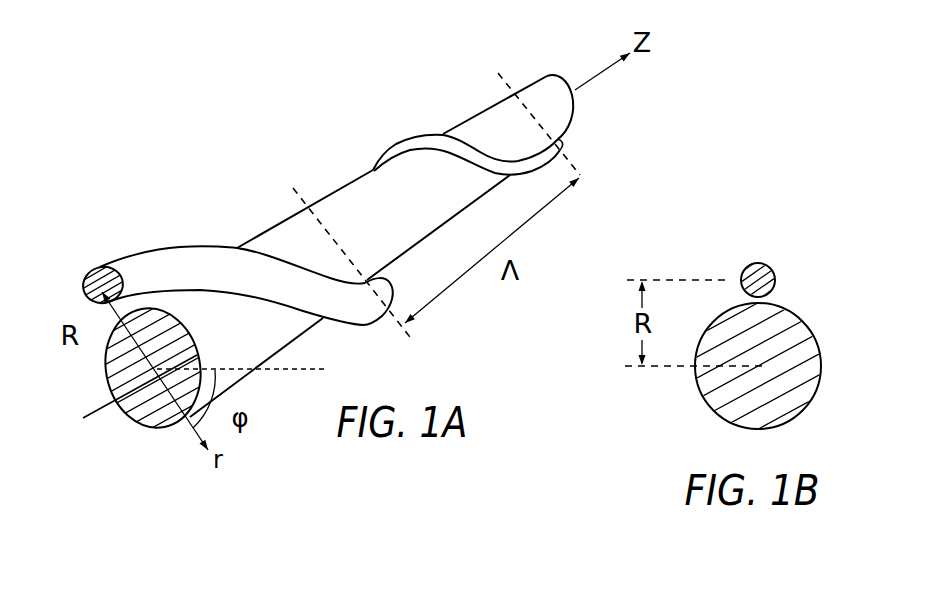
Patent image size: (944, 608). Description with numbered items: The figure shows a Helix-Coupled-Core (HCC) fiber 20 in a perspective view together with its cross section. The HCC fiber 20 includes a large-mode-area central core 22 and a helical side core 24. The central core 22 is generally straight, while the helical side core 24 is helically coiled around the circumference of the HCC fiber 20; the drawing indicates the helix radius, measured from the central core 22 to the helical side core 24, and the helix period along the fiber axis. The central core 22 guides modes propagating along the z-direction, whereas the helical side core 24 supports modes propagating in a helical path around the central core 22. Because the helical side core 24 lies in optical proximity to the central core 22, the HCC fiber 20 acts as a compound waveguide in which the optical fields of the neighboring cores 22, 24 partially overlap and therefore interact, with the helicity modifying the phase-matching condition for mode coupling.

In FIG. 1A, the Helix-Coupled-Core (HCC) fiber 20 is at (417, 92).
In FIG. 1A, the large-mode-area central core 22 is at (407, 224).
In FIG. 1B, the large-mode-area central core 22 is at (715, 398).
In FIG. 1A, the helical side core 24 is at (153, 267).
In FIG. 1B, the helical side core 24 is at (757, 262).